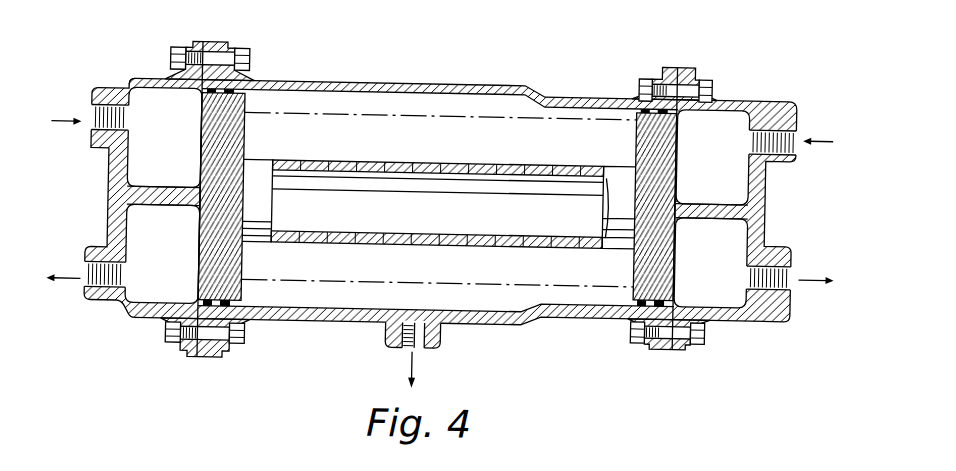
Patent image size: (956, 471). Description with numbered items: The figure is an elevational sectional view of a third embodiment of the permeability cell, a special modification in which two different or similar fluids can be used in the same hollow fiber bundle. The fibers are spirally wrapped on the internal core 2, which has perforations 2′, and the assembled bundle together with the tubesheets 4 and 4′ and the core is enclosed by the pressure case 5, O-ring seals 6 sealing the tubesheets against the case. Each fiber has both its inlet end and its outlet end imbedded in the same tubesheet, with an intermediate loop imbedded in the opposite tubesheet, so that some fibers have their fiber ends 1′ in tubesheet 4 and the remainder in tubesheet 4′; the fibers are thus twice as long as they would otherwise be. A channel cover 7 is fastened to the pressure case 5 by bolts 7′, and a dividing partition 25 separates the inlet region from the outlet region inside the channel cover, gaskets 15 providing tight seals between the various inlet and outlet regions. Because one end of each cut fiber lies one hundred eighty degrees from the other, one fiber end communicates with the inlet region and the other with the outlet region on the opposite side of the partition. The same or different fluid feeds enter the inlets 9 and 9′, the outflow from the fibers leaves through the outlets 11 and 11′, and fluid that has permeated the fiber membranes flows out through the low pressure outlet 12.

The fiber ends 1′ is at (203, 131).
The internal core 2 is at (470, 161).
The perforations 2′ is at (510, 165).
The tubesheet 4 is at (215, 105).
The tubesheet 4′ is at (672, 115).
The pressure case 5 is at (447, 84).
The O-ring seals 6 is at (238, 92).
The channel cover 7 is at (142, 83).
The bolts 7′ is at (250, 65).
The high pressure inlet opening 9 is at (87, 118).
The inlet 9′ is at (797, 145).
The outlet 11 is at (85, 277).
The outlet 11′ is at (792, 281).
The low pressure outlet 12 is at (419, 362).
The gaskets 15 is at (200, 192).
The dividing partition 25 is at (150, 200).